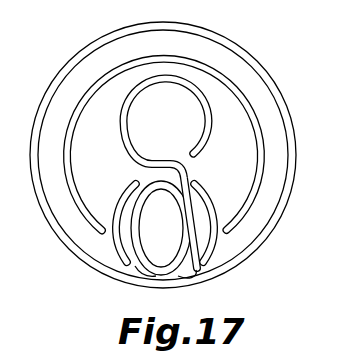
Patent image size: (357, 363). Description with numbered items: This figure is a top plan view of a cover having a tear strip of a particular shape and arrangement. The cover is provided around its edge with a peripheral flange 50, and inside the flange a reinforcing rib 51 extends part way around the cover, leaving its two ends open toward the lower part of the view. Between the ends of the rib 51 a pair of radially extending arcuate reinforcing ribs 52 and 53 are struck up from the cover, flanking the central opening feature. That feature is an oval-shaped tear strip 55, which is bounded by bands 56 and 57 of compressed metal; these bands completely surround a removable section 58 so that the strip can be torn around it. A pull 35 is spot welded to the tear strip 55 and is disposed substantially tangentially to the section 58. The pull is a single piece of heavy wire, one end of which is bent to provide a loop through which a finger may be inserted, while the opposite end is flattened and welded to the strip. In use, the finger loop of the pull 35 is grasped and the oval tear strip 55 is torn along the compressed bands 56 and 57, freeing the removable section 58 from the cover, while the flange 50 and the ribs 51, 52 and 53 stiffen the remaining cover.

The pull member 35 is at (186, 168).
The peripheral flange 50 is at (289, 128).
The reinforcing rib 51 is at (249, 110).
The arcuate reinforcing rib 52 is at (120, 243).
The arcuate reinforcing rib 53 is at (205, 254).
The oval-shaped tear strip 55 is at (150, 262).
The band of compressed metal 56 is at (181, 276).
The band of compressed metal 57 is at (136, 270).
The removable section 58 is at (161, 228).